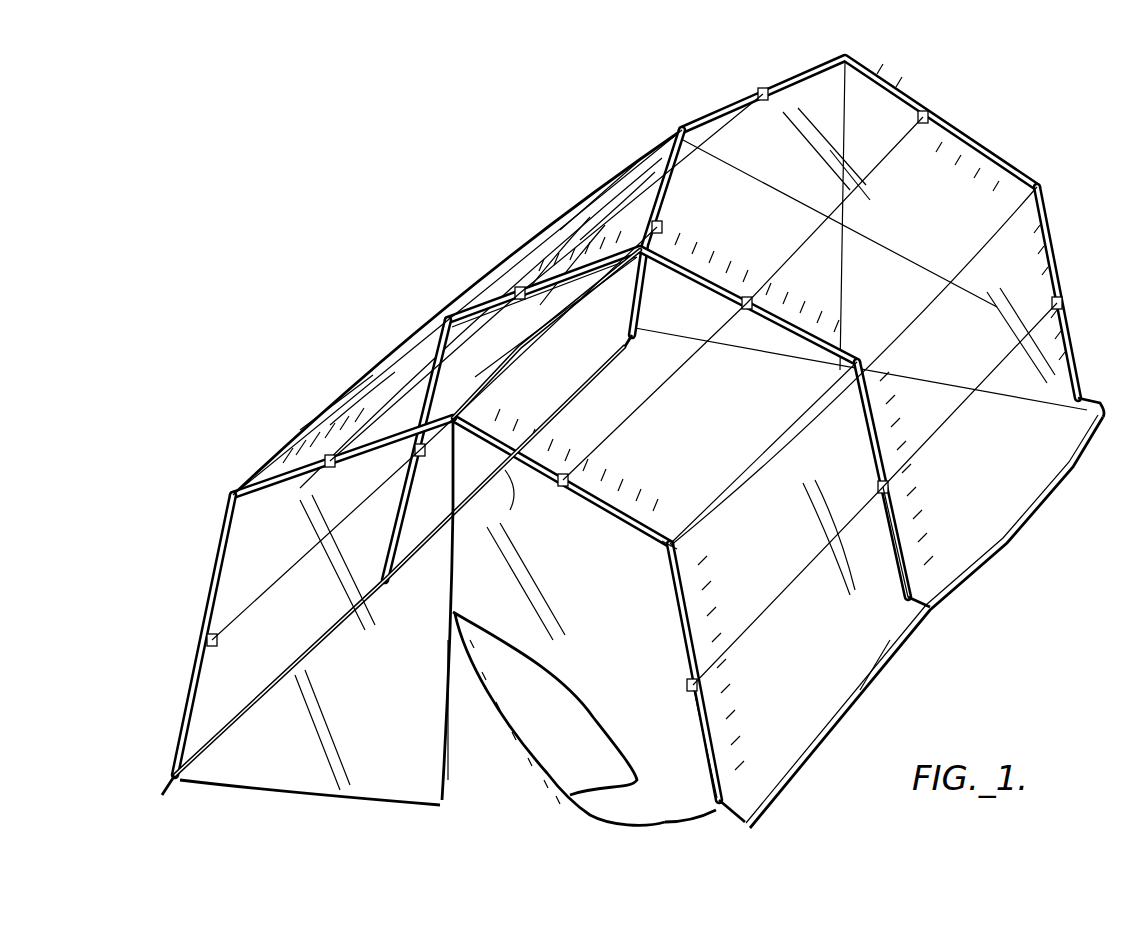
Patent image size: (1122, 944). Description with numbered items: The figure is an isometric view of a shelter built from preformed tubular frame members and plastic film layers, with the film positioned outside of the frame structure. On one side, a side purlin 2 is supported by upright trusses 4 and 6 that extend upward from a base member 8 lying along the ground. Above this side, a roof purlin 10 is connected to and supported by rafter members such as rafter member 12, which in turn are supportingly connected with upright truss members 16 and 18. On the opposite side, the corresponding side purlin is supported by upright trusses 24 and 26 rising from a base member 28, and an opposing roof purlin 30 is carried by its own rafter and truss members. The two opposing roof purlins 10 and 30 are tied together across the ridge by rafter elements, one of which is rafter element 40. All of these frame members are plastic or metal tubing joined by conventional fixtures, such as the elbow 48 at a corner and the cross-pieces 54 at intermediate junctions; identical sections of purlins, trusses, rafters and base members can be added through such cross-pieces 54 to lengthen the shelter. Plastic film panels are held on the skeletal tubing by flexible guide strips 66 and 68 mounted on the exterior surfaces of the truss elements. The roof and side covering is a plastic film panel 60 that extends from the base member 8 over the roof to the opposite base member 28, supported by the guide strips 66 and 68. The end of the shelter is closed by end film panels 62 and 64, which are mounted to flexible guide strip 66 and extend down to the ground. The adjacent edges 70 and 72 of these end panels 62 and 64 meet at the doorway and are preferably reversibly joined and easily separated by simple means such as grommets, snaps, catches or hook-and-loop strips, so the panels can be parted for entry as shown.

The side purlin 2 is at (785, 598).
The upright truss 4 is at (694, 728).
The upright truss 6 is at (909, 563).
The base member 8 is at (862, 708).
The roof purlin 10 is at (664, 386).
The rafter member 12 is at (627, 527).
The upright truss member 16 is at (680, 635).
The upright truss member 18 is at (868, 448).
The upright truss 24 is at (210, 677).
The upright truss 26 is at (173, 777).
The base member 28 is at (335, 628).
The roof purlin 30 is at (407, 398).
The rafter element 40 is at (517, 475).
The elbow 48 is at (228, 495).
The cross-piece 54 is at (490, 283).
The plastic film panel 60 is at (870, 640).
The end film panel 62 is at (443, 787).
The end film panel 64 is at (591, 602).
The flexible guide strip 66 is at (648, 508).
The flexible guide strip 68 is at (846, 347).
The adjacent edge 70 is at (450, 745).
The adjacent edge 72 is at (585, 702).